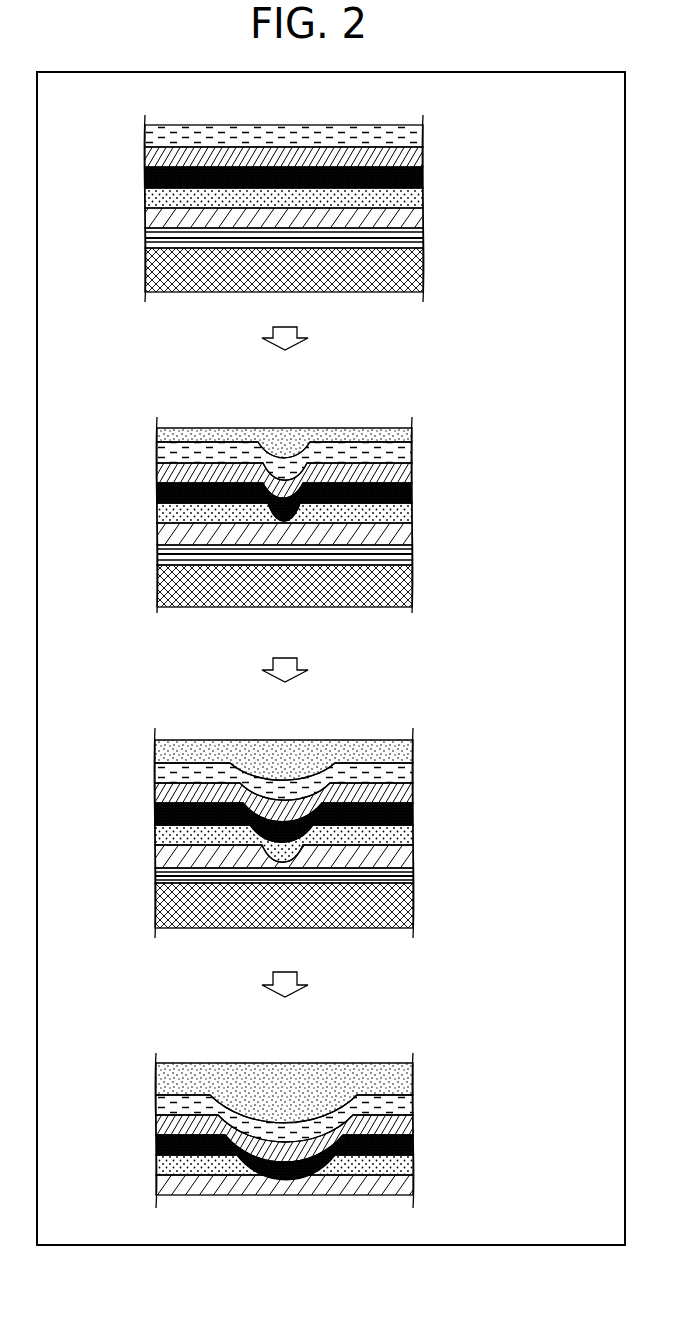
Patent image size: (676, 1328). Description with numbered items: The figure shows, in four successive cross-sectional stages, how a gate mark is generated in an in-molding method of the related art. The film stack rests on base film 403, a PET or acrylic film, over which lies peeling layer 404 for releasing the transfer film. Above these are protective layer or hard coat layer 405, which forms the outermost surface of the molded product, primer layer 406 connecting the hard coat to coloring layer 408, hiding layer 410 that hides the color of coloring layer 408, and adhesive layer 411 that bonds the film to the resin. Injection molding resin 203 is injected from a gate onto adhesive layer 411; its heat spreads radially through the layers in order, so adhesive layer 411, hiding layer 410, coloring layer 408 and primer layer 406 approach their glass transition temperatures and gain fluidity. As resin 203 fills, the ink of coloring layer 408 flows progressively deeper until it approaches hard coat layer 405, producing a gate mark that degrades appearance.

The injection molding resin 203 is at (340, 428).
The base film 403 is at (147, 265).
The peeling layer 404 is at (155, 240).
The protective layer or hard coat layer 405 is at (153, 220).
The primer layer 406 is at (148, 200).
The coloring layer 408 is at (147, 177).
The hiding layer 410 is at (143, 155).
The adhesive layer 411 is at (145, 132).